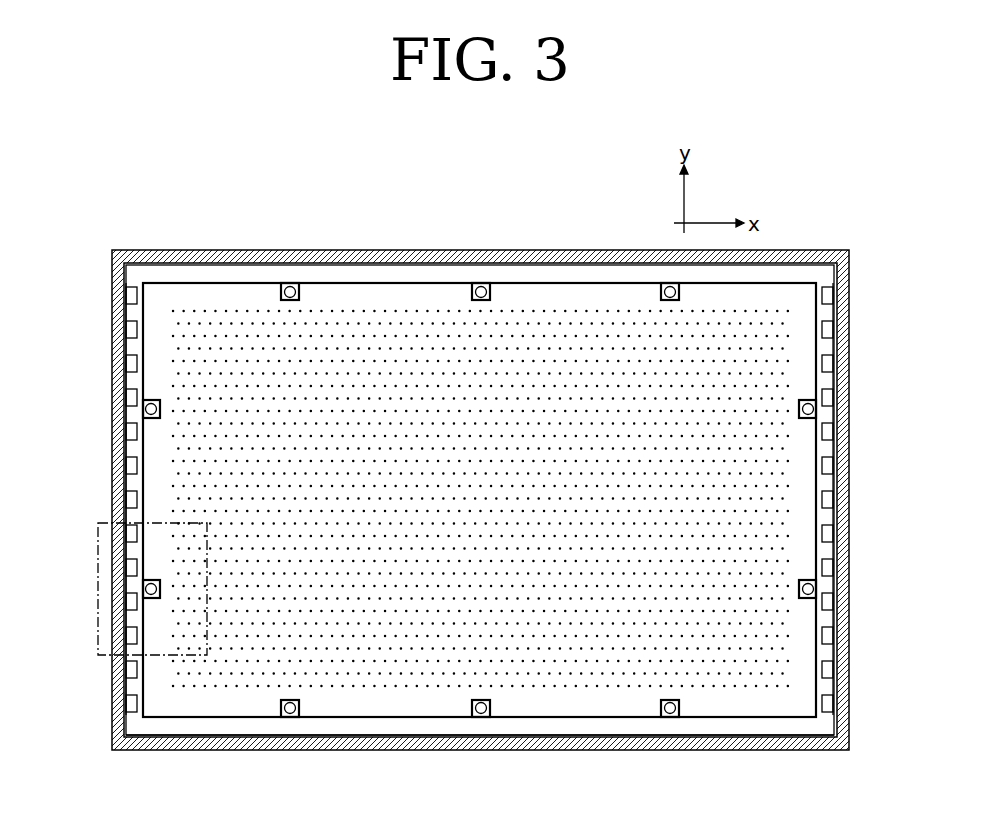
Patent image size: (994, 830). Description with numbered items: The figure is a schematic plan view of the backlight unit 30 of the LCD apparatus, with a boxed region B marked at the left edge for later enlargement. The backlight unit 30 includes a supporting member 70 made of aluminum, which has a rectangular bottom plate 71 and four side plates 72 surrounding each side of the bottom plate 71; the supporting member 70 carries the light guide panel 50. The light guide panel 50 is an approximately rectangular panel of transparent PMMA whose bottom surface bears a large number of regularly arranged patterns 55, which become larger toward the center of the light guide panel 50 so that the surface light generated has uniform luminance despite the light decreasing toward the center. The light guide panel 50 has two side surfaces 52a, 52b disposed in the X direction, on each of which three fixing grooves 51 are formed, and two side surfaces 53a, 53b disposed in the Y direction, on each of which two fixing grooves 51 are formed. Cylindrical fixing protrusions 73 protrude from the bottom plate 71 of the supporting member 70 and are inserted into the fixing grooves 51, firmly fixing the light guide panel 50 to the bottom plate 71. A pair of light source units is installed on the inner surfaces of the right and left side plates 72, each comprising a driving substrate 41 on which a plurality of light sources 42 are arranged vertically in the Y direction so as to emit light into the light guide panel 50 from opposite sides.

The backlight unit 30 is at (286, 195).
The supporting member 70 is at (112, 268).
The bottom plate 71 is at (199, 725).
The side plate 72 is at (112, 491).
The light guide panel 50 is at (562, 708).
The patterns 55 is at (535, 688).
The side surface 52a is at (395, 283).
The side surface 52b is at (630, 718).
The side surface 53a is at (126, 345).
The side surface 53b is at (836, 333).
The driving substrate 41 is at (130, 411).
The light source 42 is at (128, 431).
The fixing protrusion 73 is at (288, 720).
The fixing groove 51 is at (297, 714).
The detail region B is at (98, 655).